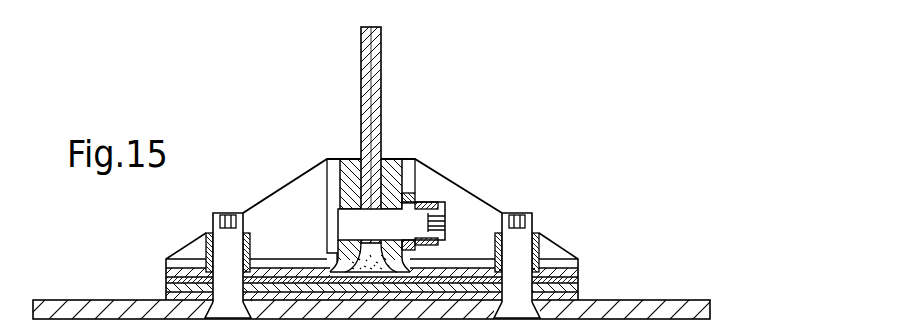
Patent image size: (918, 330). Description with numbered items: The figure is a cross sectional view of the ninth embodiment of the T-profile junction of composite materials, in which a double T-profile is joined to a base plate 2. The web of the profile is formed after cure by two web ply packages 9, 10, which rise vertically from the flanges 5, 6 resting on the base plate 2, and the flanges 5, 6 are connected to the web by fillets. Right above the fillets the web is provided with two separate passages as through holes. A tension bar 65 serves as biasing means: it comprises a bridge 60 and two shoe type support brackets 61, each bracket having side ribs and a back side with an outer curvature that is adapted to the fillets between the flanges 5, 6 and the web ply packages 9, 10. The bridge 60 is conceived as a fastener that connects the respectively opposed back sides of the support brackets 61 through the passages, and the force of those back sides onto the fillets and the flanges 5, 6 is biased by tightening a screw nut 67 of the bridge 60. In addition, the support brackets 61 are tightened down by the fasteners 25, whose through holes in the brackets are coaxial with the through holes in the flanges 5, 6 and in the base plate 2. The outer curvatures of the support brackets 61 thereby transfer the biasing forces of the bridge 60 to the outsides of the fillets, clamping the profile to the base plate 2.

The base plate 2 is at (674, 302).
The flange 5 is at (567, 276).
The flange 6 is at (166, 277).
The web ply package 9 is at (381, 43).
The web ply package 10 is at (361, 43).
The fastener 25 is at (530, 240).
The bridge 60 is at (393, 222).
The support bracket 61 is at (277, 210).
The tension bar 65 is at (482, 154).
The screw nut 67 is at (408, 193).